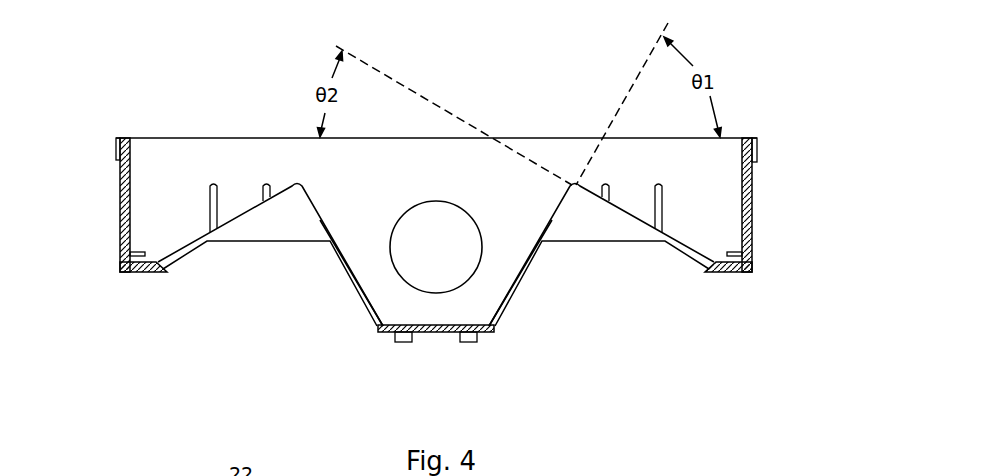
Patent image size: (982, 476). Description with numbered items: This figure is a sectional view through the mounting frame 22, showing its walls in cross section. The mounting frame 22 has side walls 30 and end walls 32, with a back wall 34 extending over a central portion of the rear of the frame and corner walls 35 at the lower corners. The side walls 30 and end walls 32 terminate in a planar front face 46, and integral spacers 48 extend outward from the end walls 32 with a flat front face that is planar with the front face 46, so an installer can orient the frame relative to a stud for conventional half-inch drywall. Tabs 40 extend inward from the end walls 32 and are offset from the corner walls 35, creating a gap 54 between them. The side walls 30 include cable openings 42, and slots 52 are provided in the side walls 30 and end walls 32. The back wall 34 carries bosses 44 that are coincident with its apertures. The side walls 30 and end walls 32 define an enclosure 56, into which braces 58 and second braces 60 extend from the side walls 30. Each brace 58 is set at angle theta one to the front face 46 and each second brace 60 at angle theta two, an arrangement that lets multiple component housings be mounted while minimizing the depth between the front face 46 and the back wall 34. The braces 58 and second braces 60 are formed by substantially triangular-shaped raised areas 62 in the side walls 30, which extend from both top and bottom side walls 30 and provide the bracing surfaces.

The mounting frame 22 is at (124, 94).
The side walls 30 is at (449, 171).
The end walls 32 is at (753, 205).
The back wall 34 is at (435, 343).
The corner walls 35 is at (135, 273).
The tabs 40 is at (727, 254).
The cable openings 42 is at (446, 259).
The bosses 44 is at (475, 342).
The front face 46 is at (202, 138).
The integral spacers 48 is at (758, 152).
The slots 52 is at (210, 207).
The gap 54 is at (713, 265).
The enclosure 56 is at (285, 160).
The braces 58 is at (330, 228).
The second braces 60 is at (240, 212).
The raised areas 62 is at (591, 231).